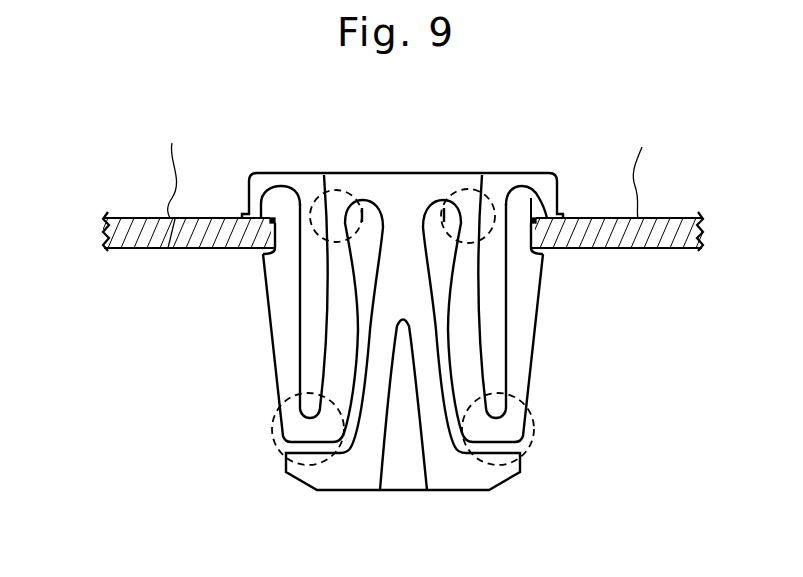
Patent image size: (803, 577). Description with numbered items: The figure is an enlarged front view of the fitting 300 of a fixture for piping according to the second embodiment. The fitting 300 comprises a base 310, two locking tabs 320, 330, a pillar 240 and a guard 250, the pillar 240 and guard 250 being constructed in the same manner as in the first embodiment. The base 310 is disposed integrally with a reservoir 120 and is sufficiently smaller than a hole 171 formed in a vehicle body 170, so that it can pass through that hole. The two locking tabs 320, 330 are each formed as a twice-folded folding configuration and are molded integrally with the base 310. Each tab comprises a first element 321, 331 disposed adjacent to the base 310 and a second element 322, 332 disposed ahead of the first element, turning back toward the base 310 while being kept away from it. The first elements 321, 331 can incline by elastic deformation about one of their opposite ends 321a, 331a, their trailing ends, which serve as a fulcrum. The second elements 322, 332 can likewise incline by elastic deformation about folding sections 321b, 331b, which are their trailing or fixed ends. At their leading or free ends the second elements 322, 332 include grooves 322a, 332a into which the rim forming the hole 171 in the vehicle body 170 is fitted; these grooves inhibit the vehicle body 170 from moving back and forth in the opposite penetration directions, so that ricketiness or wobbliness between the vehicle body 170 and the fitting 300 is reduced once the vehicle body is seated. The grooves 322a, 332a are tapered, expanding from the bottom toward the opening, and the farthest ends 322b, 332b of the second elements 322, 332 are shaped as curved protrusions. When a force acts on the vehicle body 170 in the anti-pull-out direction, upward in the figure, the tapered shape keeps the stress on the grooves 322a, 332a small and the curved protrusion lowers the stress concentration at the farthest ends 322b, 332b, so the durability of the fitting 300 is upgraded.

The reservoir 120 is at (168, 248).
The vehicle body 170 is at (678, 218).
The hole 171 is at (511, 198).
The pillar 240 is at (402, 268).
The guard 250 is at (333, 471).
The fitting 300 is at (397, 328).
The base 310 is at (405, 188).
The locking tab 320 is at (229, 299).
The first element 321 is at (262, 299).
The end of first element 321a is at (331, 191).
The folding section 321b is at (275, 441).
The second element 322 is at (249, 277).
The groove 322a is at (262, 250).
The farthest end 322b is at (270, 196).
The locking tab 330 is at (560, 290).
The first element 331 is at (528, 290).
The end of first element 331a is at (461, 190).
The folding section 331b is at (530, 426).
The second element 332 is at (559, 286).
The groove 332a is at (546, 251).
The farthest end 332b is at (533, 204).